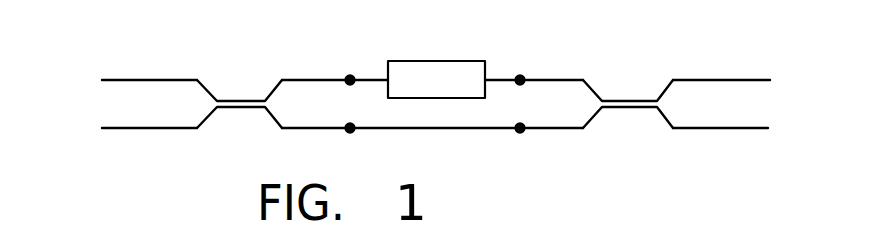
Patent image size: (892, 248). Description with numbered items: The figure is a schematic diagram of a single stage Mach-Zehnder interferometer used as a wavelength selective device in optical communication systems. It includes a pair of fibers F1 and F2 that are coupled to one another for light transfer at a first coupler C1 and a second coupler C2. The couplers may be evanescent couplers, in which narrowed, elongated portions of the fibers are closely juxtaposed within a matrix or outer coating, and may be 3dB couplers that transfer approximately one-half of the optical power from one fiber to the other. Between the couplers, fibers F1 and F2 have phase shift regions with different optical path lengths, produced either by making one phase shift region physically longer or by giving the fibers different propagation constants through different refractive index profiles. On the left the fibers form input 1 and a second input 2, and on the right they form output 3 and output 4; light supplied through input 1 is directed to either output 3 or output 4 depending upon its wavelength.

The input 1 is at (134, 80).
The input port 2 is at (133, 130).
The output 3 is at (735, 82).
The output 4 is at (735, 130).
The first coupler C1 is at (241, 100).
The second coupler C2 is at (626, 99).
The fiber F1 is at (503, 75).
The fiber F2 is at (500, 128).